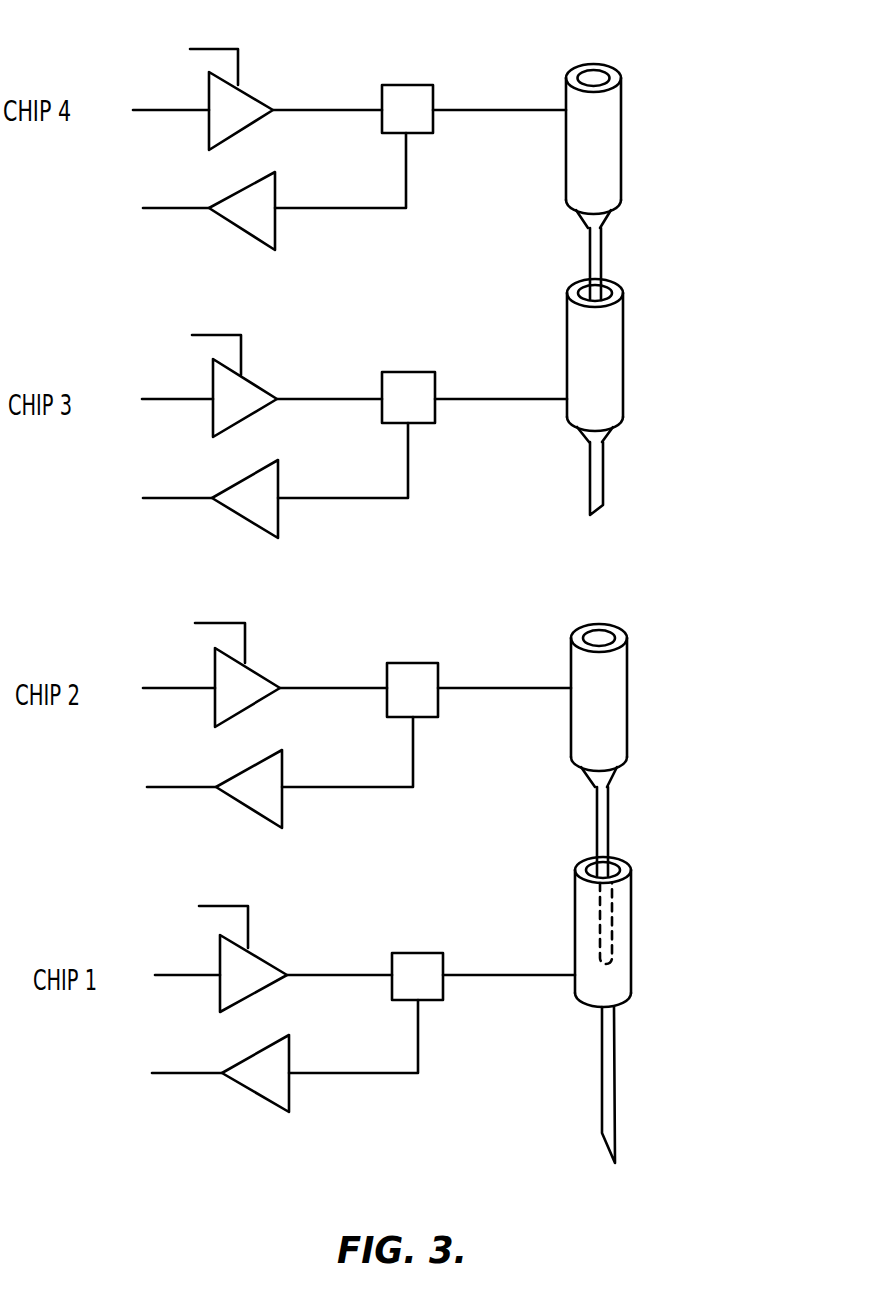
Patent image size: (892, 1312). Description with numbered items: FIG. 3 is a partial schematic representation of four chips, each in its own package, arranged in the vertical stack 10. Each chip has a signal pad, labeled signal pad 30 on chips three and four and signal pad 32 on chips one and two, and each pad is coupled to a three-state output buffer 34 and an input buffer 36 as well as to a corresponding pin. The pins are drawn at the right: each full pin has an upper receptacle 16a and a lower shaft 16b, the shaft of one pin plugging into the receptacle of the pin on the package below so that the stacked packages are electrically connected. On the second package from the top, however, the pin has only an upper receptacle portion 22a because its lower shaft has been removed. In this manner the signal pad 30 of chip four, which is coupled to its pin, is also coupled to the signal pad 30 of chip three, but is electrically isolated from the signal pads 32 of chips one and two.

The stack 10 is at (740, 34).
The upper receptacle 16a is at (622, 124).
The lower shaft 16b is at (601, 254).
The upper receptacle portion 22a is at (618, 370).
The signal pad 30 is at (430, 86).
The signal pad 32 is at (437, 645).
The three-state output buffer 34 is at (250, 94).
The input buffer 36 is at (246, 231).